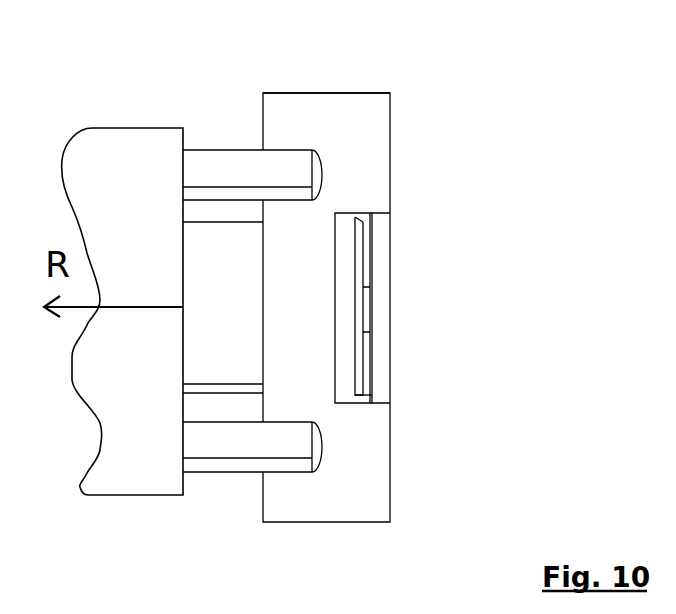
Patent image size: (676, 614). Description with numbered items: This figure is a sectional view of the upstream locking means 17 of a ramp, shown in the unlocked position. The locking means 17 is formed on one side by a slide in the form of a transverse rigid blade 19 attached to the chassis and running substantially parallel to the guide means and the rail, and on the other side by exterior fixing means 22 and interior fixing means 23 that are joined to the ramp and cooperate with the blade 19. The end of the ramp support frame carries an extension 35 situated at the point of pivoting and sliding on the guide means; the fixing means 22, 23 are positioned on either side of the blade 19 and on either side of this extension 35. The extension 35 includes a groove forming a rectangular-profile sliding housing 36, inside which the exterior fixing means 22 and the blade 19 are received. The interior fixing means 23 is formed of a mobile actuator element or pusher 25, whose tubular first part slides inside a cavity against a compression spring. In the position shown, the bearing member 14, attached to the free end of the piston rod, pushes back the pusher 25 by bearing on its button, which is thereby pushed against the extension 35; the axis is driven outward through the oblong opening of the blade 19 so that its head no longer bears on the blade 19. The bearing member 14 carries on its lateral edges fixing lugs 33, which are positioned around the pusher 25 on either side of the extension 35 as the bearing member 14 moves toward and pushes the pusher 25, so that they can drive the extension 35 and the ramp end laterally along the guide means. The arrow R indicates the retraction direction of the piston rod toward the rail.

The upstream bearing member 14 is at (133, 128).
The upstream locking means 17 is at (313, 70).
The upstream transverse rigid blade 19 is at (357, 217).
The exterior fixing means 22 is at (392, 297).
The interior fixing means 23 is at (215, 222).
The pusher 25 is at (220, 395).
The fixing lugs 33 is at (322, 160).
The extension 35 is at (390, 100).
The sliding housing 36 is at (372, 403).